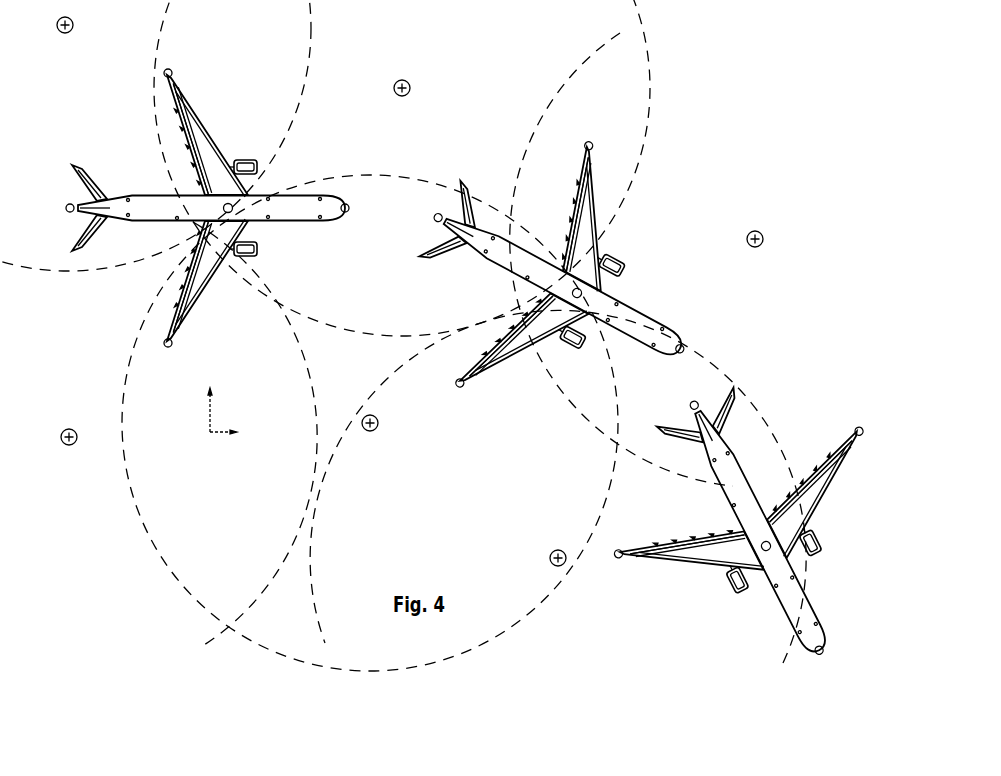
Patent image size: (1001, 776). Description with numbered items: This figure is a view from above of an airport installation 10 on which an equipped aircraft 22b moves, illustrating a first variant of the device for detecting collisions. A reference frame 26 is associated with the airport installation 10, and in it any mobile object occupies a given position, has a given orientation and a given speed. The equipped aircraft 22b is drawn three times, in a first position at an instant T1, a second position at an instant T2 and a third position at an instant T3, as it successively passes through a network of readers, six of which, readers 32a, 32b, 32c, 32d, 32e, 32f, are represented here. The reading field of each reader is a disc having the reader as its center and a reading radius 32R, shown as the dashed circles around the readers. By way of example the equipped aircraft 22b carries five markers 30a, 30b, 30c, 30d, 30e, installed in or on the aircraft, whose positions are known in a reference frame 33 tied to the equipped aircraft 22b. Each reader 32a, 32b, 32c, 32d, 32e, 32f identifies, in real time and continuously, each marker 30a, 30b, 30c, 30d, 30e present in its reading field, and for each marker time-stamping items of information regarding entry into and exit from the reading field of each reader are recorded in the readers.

The airport installation 10 is at (243, 403).
The equipped aircraft 22b is at (480, 390).
The reference frame 26 is at (187, 469).
The marker 30a is at (538, 379).
The marker 30b is at (494, 253).
The marker 30c is at (394, 423).
The marker 30d is at (603, 426).
The marker 30e is at (361, 307).
The reader 32a is at (93, 38).
The reader 32b is at (89, 410).
The reader 32c is at (442, 89).
The reader 32d is at (404, 443).
The reader 32e is at (727, 261).
The reader 32f is at (564, 521).
The reading radius 32R is at (403, 335).
The reference frame 33 is at (208, 207).